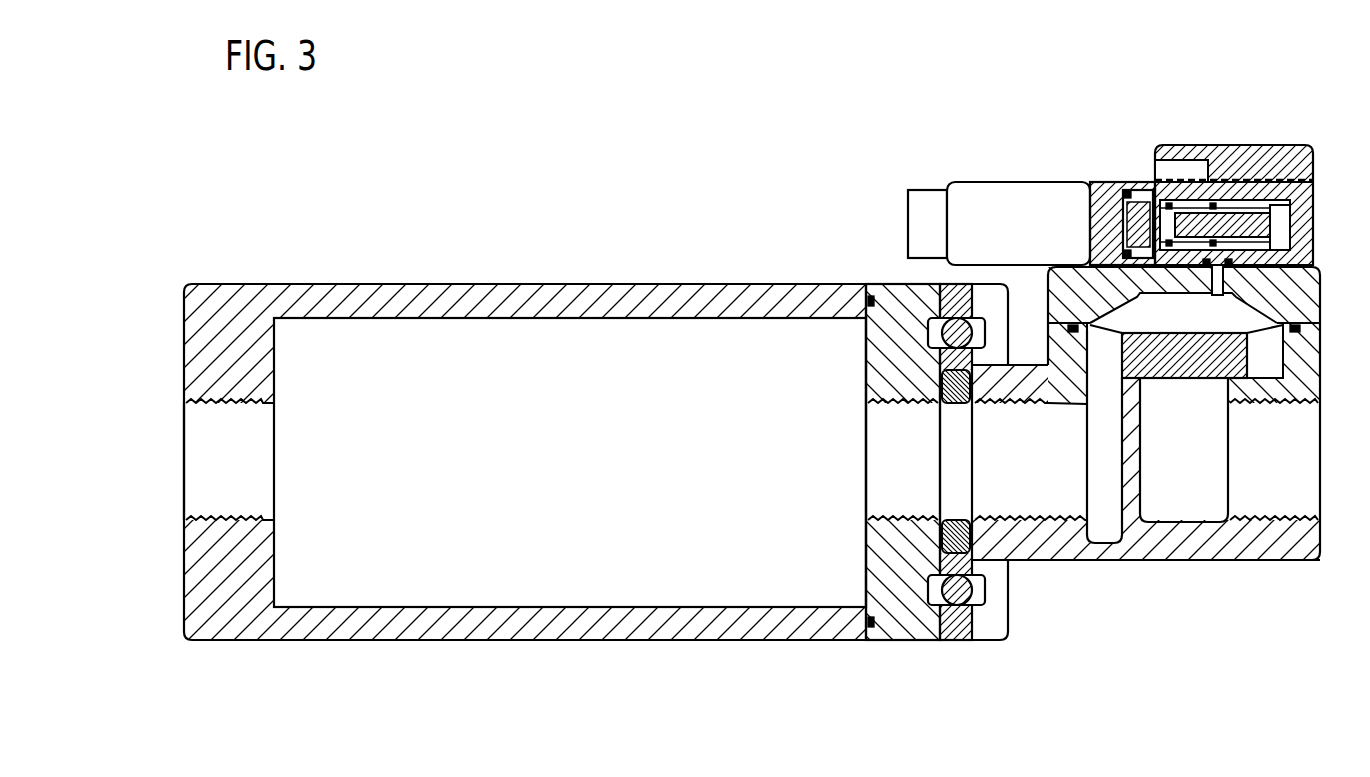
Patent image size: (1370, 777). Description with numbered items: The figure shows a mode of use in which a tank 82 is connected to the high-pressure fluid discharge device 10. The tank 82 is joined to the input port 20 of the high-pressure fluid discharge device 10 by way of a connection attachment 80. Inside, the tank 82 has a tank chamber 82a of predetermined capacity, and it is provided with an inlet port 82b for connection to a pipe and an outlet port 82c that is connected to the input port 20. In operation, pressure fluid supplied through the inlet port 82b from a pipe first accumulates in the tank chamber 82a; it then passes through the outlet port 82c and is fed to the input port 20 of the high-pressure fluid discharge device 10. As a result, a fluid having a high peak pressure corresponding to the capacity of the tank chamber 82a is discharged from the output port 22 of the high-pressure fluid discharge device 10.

The high-pressure fluid discharge device 10 is at (1327, 198).
The input port 20 is at (1033, 505).
The output port 22 is at (1280, 505).
The connection attachment 80 is at (958, 628).
The tank 82 is at (553, 273).
The tank chamber 82a is at (620, 560).
The inlet port 82b is at (202, 478).
The outlet port 82c is at (902, 500).